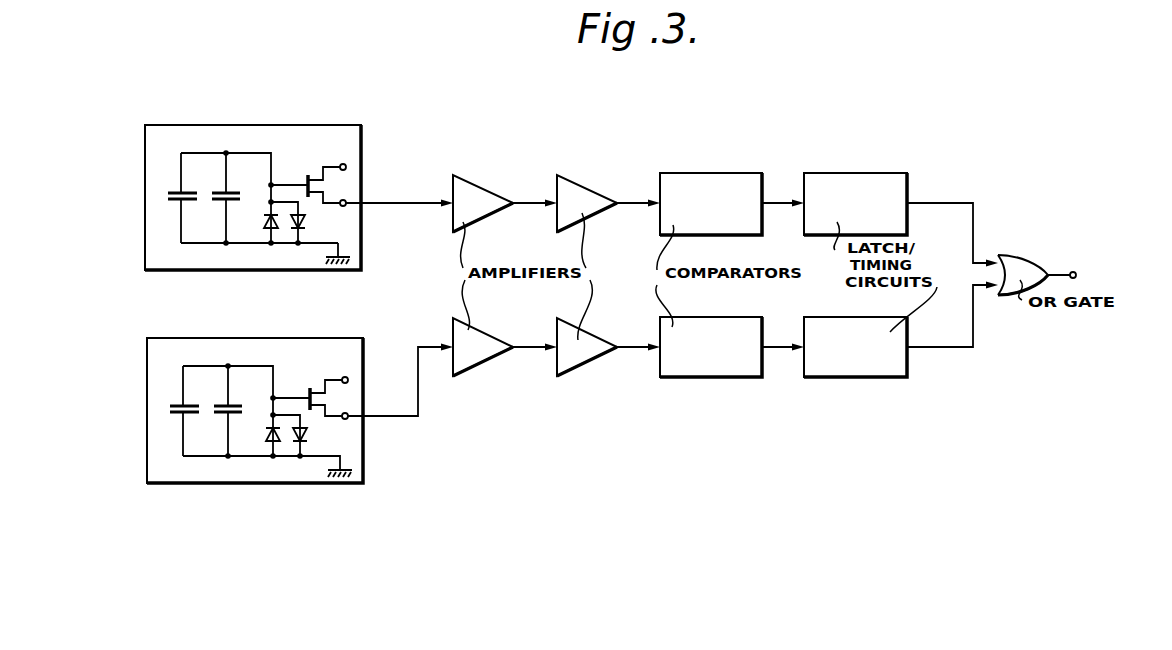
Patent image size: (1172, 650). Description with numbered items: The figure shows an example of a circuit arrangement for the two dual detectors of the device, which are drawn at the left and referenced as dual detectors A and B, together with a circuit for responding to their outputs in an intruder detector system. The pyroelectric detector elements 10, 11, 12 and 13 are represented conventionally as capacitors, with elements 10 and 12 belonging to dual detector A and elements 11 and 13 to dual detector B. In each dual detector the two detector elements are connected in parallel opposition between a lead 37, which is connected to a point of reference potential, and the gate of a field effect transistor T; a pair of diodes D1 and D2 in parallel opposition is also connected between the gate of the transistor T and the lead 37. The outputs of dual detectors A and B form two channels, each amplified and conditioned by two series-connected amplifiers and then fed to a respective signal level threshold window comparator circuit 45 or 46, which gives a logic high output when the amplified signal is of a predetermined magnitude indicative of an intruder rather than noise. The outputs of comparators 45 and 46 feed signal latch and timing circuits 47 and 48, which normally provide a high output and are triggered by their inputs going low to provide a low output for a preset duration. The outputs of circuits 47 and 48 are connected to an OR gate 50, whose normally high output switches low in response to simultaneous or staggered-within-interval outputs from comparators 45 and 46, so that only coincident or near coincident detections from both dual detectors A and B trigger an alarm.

The dual detector A is at (198, 125).
The dual detector B is at (147, 340).
The pyroelectric detector element 10 is at (168, 195).
The pyroelectric detector element 11 is at (170, 410).
The pyroelectric detector element 12 is at (240, 193).
The pyroelectric detector element 13 is at (243, 408).
The lead 37 is at (247, 243).
The field effect transistor T is at (308, 176).
The diode D1 is at (275, 222).
The diode D2 is at (310, 222).
The signal level threshold window comparator circuit 45 is at (703, 173).
The signal level threshold window comparator circuit 46 is at (722, 377).
The signal latch and timing circuit 47 is at (908, 173).
The signal latch and timing circuit 48 is at (910, 377).
The OR gate 50 is at (1027, 258).